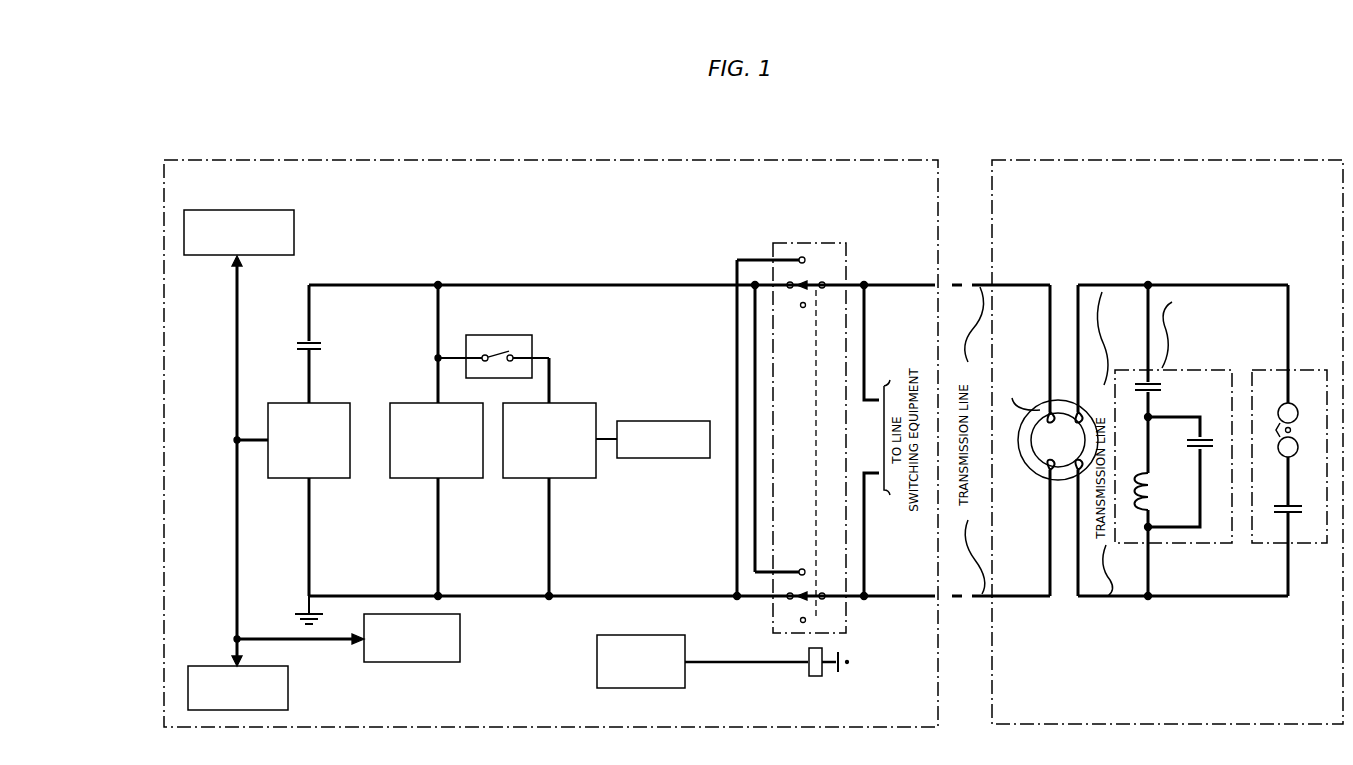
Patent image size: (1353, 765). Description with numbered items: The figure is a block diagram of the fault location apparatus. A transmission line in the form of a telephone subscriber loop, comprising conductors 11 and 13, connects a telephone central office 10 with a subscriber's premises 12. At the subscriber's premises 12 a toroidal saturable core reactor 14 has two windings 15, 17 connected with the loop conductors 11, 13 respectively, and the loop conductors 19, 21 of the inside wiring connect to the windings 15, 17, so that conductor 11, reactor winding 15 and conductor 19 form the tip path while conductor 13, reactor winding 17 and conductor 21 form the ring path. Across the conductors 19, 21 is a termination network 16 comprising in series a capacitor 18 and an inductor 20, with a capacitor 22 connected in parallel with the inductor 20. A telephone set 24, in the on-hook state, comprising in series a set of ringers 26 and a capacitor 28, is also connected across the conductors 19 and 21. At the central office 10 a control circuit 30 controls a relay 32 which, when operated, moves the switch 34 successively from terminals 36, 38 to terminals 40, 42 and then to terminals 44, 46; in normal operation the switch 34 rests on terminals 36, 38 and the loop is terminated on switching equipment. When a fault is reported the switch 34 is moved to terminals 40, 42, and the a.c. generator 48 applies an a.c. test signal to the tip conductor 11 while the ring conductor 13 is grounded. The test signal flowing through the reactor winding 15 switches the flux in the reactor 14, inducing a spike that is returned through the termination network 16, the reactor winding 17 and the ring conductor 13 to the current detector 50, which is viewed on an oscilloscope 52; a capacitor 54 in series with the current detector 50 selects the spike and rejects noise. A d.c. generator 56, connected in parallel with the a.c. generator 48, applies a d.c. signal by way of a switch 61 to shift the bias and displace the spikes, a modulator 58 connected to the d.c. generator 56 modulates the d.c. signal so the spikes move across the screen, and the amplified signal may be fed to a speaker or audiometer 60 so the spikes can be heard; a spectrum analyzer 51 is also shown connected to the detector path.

The telephone central office 10 is at (541, 170).
The conductor 11 is at (965, 283).
The subscriber's premises 12 is at (1158, 172).
The conductor 13 is at (962, 600).
The saturable core reactor 14 is at (1030, 455).
The reactor winding 15 is at (1056, 405).
The termination network 16 is at (1210, 392).
The reactor winding 17 is at (1060, 482).
The capacitor 18 is at (1162, 351).
The loop conductor 19 is at (1118, 294).
The inductor 20 is at (1158, 506).
The loop conductor 21 is at (1110, 600).
The capacitor 22 is at (1180, 472).
The telephone set 24 is at (1268, 392).
The set of ringers 26 is at (1295, 430).
The capacitor 28 is at (1282, 498).
The control circuit 30 is at (597, 666).
The relay 32 is at (767, 672).
The switch 34 is at (822, 437).
The terminal 36 is at (804, 315).
The terminal 38 is at (813, 622).
The terminal 40 is at (799, 292).
The terminal 42 is at (799, 603).
The terminal 44 is at (812, 260).
The terminal 46 is at (805, 562).
The a.c. generator 48 is at (402, 405).
The current detector 50 is at (328, 468).
The spectrum analyzer 51 is at (410, 662).
The oscilloscope 52 is at (237, 215).
The capacitor 54 is at (297, 440).
The d.c. generator 56 is at (592, 468).
The modulator 58 is at (663, 421).
The audiometer 60 is at (288, 688).
The switch 61 is at (498, 347).